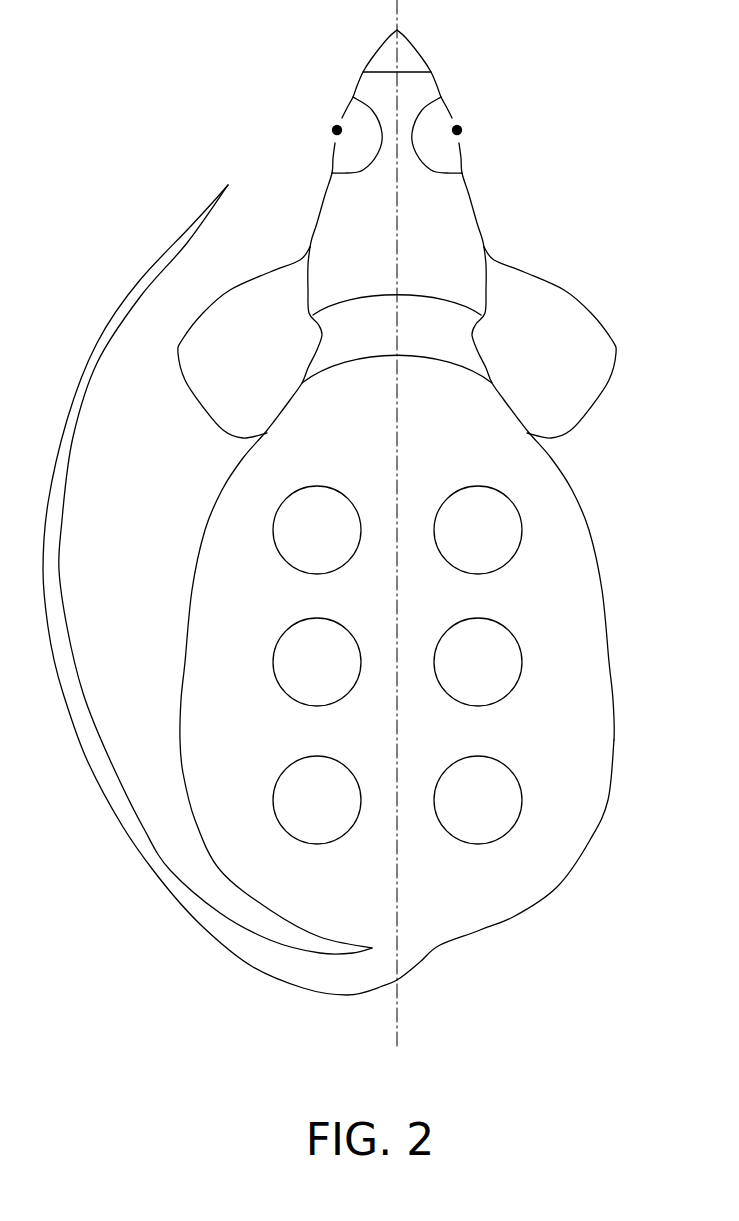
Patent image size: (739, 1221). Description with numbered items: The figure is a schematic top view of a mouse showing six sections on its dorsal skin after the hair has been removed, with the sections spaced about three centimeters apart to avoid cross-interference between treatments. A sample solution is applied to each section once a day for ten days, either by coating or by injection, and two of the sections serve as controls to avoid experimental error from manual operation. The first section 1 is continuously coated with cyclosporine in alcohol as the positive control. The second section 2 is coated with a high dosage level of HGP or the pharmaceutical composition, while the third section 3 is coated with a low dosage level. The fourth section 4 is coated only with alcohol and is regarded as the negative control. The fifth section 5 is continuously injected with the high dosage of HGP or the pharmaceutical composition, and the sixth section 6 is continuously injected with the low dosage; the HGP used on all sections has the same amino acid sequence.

The first section 1 is at (273, 530).
The second section 2 is at (273, 662).
The third section 3 is at (273, 800).
The fourth section 4 is at (522, 530).
The fifth section 5 is at (522, 662).
The sixth section 6 is at (522, 800).